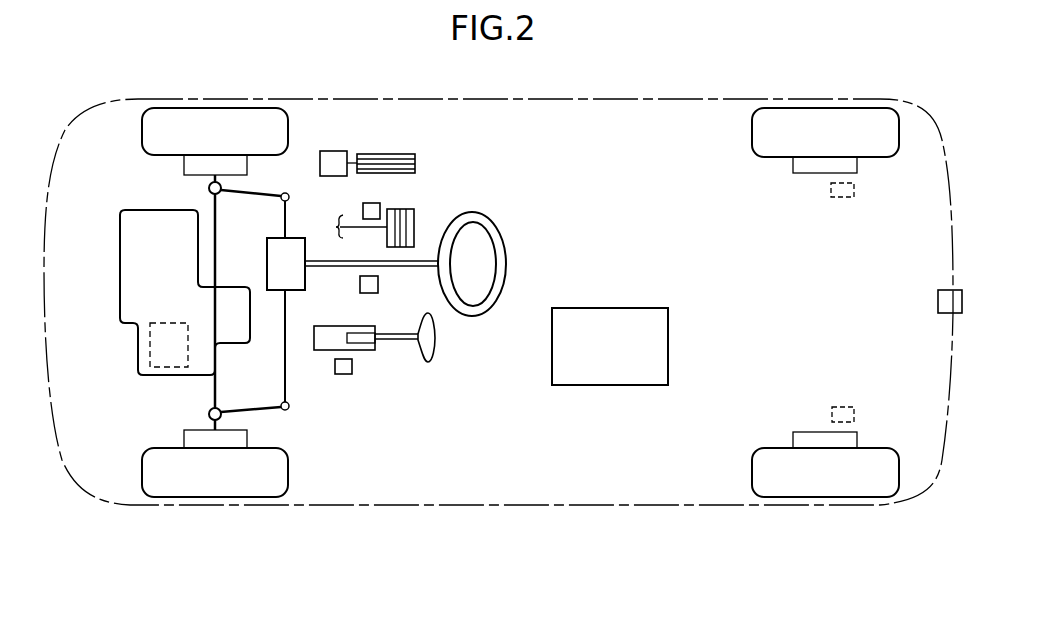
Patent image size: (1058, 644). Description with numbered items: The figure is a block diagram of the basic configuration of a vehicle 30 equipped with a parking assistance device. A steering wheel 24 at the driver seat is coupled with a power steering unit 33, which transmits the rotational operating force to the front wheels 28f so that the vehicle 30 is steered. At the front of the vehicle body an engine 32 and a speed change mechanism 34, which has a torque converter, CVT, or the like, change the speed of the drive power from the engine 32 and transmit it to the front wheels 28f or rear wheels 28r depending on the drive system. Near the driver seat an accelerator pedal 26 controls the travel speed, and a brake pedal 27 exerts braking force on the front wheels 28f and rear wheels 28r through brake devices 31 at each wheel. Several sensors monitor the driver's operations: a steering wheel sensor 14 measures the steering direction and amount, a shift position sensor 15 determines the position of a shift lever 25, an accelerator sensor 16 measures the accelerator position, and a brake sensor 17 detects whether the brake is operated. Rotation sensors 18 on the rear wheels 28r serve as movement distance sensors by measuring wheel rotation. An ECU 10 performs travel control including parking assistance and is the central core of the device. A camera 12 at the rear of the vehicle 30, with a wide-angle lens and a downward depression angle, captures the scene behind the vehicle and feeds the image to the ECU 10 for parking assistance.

The ECU 10 is at (608, 308).
The camera 12 is at (945, 303).
The steering wheel sensor 14 is at (366, 293).
The shift position sensor 15 is at (352, 366).
The accelerator sensor 16 is at (335, 151).
The brake sensor 17 is at (363, 212).
The rotation sensors 18 is at (843, 197).
The steering wheel 24 is at (507, 256).
The shift lever 25 is at (435, 338).
The accelerator pedal 26 is at (400, 154).
The brake pedal 27 is at (414, 222).
The front wheels 28f is at (217, 108).
The rear wheels 28r is at (823, 108).
The vehicle 30 is at (630, 99).
The brake devices 31 is at (184, 163).
The engine 32 is at (170, 375).
The power steering unit 33 is at (267, 277).
The speed change mechanism 34 is at (150, 348).